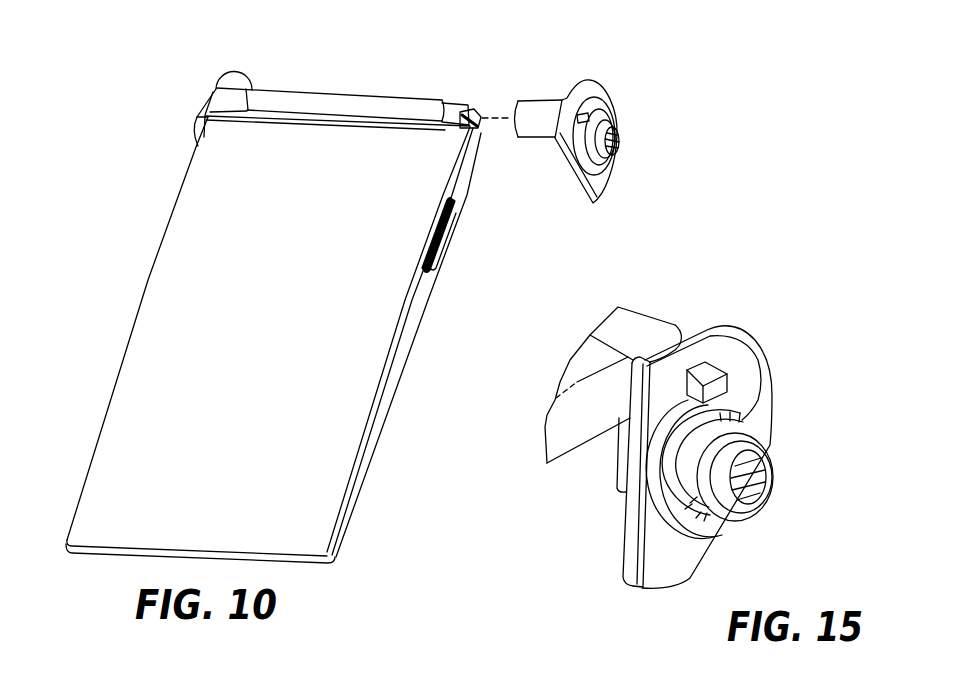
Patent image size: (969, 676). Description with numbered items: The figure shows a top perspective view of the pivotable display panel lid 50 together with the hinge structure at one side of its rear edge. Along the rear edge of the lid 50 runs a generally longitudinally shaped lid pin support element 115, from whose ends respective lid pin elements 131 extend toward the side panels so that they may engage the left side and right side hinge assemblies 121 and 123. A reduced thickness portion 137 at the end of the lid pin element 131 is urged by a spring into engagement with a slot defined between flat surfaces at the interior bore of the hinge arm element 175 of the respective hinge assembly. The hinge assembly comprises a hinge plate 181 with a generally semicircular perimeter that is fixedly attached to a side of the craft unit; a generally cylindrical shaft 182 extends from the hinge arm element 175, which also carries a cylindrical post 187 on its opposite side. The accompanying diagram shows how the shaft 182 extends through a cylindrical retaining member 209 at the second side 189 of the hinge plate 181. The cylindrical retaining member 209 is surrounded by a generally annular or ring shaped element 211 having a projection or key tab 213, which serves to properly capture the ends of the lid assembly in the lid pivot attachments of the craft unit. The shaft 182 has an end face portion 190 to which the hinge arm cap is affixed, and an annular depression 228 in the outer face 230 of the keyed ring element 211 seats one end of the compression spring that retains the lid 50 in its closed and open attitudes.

In FIG. 10, the lid 50 is at (106, 350).
In FIG. 15, the lid 50 is at (558, 474).
In FIG. 10, the lid pin support element 115 is at (323, 92).
In FIG. 10, the left side hinge assembly 121 is at (223, 70).
In FIG. 10, the right side hinge assembly 123 is at (611, 96).
In FIG. 10, the lid pin element 131 is at (457, 101).
In FIG. 10, the reduced thickness portion 137 is at (476, 108).
In FIG. 10, the hinge arm element 175 is at (553, 98).
In FIG. 15, the hinge plate 181 is at (752, 338).
In FIG. 15, the shaft 182 is at (772, 450).
In FIG. 15, the cylindrical post 187 is at (630, 312).
In FIG. 15, the second side 189 is at (665, 578).
In FIG. 15, the end face portion 190 is at (747, 507).
In FIG. 15, the cylindrical retaining member 209 is at (770, 417).
In FIG. 15, the ring shaped element 211 is at (750, 386).
In FIG. 15, the key tab 213 is at (691, 379).
In FIG. 15, the annular depression 228 is at (705, 525).
In FIG. 15, the outer face 230 is at (760, 400).